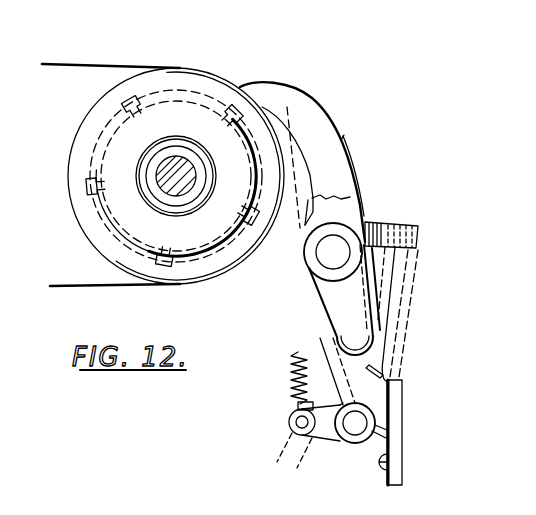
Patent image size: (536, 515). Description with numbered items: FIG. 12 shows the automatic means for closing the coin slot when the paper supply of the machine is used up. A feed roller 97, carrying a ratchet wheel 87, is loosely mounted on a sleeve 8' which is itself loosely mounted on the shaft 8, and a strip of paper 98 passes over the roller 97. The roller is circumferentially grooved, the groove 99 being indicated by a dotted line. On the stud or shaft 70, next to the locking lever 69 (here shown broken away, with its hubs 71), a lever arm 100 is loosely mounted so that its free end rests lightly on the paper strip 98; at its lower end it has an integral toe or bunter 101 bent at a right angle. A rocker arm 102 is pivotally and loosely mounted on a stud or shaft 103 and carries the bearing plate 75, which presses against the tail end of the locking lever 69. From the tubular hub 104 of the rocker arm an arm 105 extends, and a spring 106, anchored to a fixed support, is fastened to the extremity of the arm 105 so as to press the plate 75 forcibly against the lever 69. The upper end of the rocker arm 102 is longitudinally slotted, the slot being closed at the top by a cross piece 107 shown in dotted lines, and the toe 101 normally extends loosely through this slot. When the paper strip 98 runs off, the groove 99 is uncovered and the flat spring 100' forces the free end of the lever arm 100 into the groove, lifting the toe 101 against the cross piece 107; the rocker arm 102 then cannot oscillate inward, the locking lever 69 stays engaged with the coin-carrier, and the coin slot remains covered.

The shaft 8 is at (184, 111).
The sleeve 8' is at (176, 228).
The locking lever 69 is at (318, 213).
The shaft 70 is at (333, 252).
The hubs 71 is at (330, 281).
The bearing plate 75 is at (328, 365).
The ratchet wheel 87 is at (105, 226).
The feed roller 97 is at (86, 121).
The strip of paper 98 is at (75, 63).
The circumferential groove 99 is at (97, 145).
The lever arm 100 is at (324, 159).
The flat spring 100' is at (393, 174).
The toe or bunter 101 is at (392, 268).
The rocker arm 102 is at (395, 327).
The stud or shaft 103 is at (356, 424).
The tubular hub 104 is at (378, 430).
The arm 105 is at (325, 428).
The spring 106 is at (303, 389).
The cross piece 107 is at (388, 221).